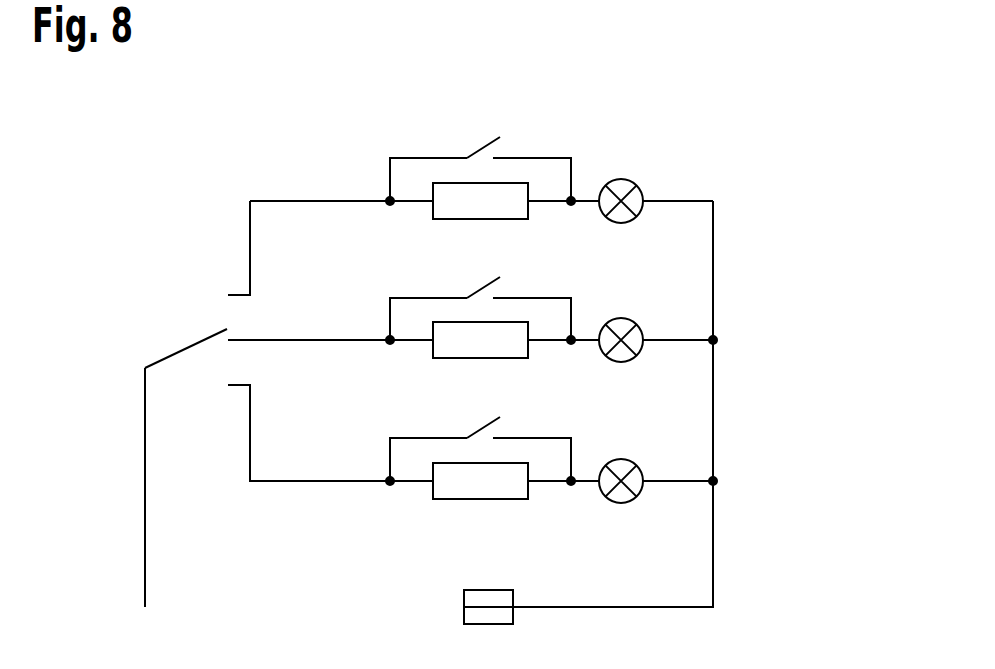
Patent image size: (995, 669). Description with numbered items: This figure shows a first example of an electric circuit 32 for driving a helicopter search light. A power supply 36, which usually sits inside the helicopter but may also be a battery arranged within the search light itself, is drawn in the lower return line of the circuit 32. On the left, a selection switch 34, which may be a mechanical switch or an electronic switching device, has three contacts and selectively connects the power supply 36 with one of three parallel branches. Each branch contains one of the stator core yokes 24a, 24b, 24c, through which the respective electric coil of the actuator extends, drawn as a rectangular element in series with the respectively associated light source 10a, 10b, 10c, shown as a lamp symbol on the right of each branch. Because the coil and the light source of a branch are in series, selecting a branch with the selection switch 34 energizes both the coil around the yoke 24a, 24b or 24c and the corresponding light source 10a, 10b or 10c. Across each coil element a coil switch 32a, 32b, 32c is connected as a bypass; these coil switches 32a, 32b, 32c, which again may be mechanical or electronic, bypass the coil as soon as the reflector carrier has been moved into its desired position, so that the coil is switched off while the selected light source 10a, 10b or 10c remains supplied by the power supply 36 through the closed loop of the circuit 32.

The electric circuit 32 is at (784, 141).
The selection switch 34 is at (174, 337).
The power supply 36 is at (503, 605).
The yoke 24a is at (452, 200).
The yoke 24b is at (452, 340).
The yoke 24c is at (452, 480).
The coil switch 32a is at (507, 142).
The coil switch 32b is at (507, 284).
The coil switch 32c is at (507, 424).
The light source 10a is at (632, 171).
The light source 10b is at (631, 311).
The light source 10c is at (631, 451).